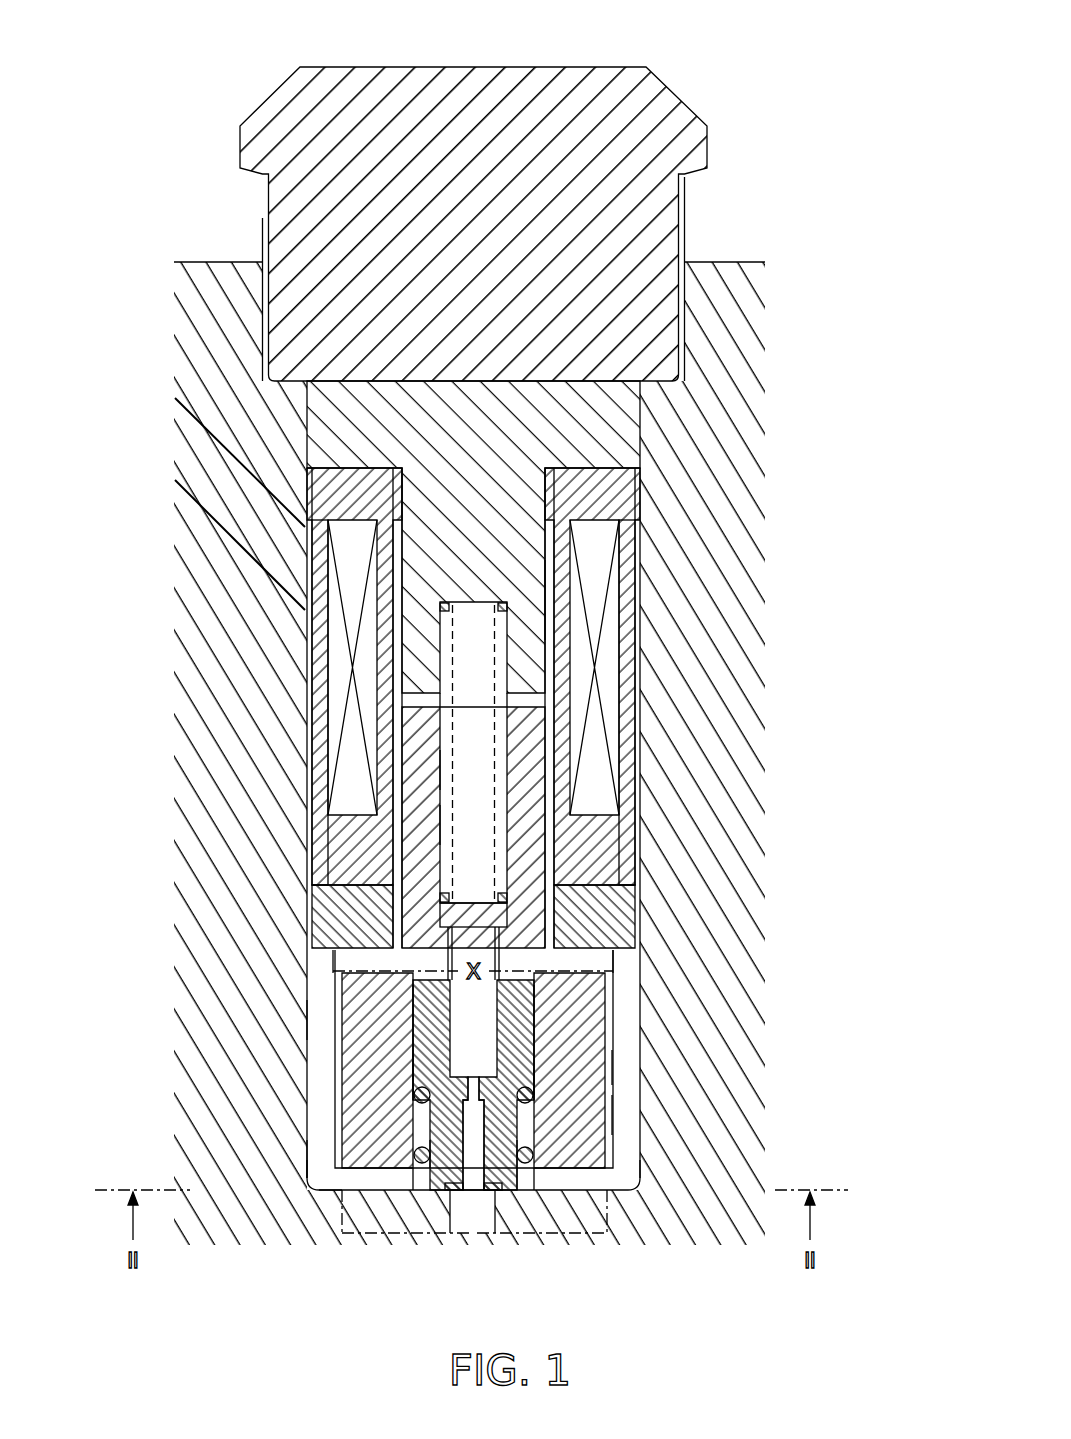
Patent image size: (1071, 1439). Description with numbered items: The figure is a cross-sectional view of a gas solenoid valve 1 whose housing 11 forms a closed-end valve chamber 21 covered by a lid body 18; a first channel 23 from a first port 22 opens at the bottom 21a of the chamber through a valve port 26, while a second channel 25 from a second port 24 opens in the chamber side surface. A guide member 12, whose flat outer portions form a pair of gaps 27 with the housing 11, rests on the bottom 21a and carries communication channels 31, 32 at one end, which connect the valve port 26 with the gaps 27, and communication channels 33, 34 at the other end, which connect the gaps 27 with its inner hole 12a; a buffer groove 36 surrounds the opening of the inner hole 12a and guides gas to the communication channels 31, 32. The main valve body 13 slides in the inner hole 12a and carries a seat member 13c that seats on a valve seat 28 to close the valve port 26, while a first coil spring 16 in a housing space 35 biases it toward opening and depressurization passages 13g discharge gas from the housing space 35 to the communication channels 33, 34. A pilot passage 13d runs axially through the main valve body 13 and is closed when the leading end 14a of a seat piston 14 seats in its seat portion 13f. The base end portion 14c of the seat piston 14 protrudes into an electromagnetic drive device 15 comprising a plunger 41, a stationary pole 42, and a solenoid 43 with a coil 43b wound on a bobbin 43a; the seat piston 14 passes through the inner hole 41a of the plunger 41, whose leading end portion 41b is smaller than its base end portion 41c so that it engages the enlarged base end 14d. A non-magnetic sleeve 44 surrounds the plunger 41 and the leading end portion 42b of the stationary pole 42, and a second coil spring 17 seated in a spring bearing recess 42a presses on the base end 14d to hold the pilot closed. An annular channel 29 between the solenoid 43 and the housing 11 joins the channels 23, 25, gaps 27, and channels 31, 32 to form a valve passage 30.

The gas solenoid valve 1 is at (799, 98).
The housing 11 is at (750, 720).
The guide member 12 is at (620, 1115).
The inner hole 12a is at (612, 1080).
The main valve body 13 is at (606, 985).
The seat member 13c is at (500, 1190).
The pilot passage 13d is at (535, 1150).
The seat portion 13f is at (534, 1092).
The depressurization passages 13g is at (410, 1030).
The seat piston 14 is at (446, 1030).
The leading end 14a is at (414, 1072).
The base end portion 14c is at (522, 935).
The base end 14d is at (508, 920).
The electromagnetic drive device 15 is at (612, 464).
The first coil spring 16 is at (395, 1155).
The second coil spring 17 is at (498, 875).
The lid body 18 is at (655, 88).
The valve chamber 21 is at (310, 1165).
The bottom 21a is at (340, 1190).
The first port 22 is at (480, 1233).
The first channel 23 is at (458, 1232).
The second port 24 is at (176, 440).
The second channel 25 is at (190, 492).
The valve port 26 is at (470, 1160).
The gaps 27 is at (315, 1130).
The valve seat 28 is at (445, 1190).
The annular channel 29 is at (312, 900).
The valve passage 30 is at (318, 1020).
The communication channel 31 is at (362, 1190).
The communication channel 32 is at (575, 1190).
The communication channel 33 is at (340, 968).
The communication channel 34 is at (600, 968).
The housing space 35 is at (414, 1093).
The buffer groove 36 is at (492, 1190).
The plunger 41 is at (392, 862).
The inner hole 41a is at (447, 830).
The leading end portion 41b is at (447, 935).
The base end portion 41c is at (447, 775).
The stationary pole 42 is at (516, 395).
The spring bearing recess 42a is at (450, 606).
The leading end portion 42b is at (598, 600).
The solenoid 43 is at (406, 734).
The bobbin 43a is at (315, 838).
The coil 43b is at (325, 690).
The sleeve 44 is at (596, 650).